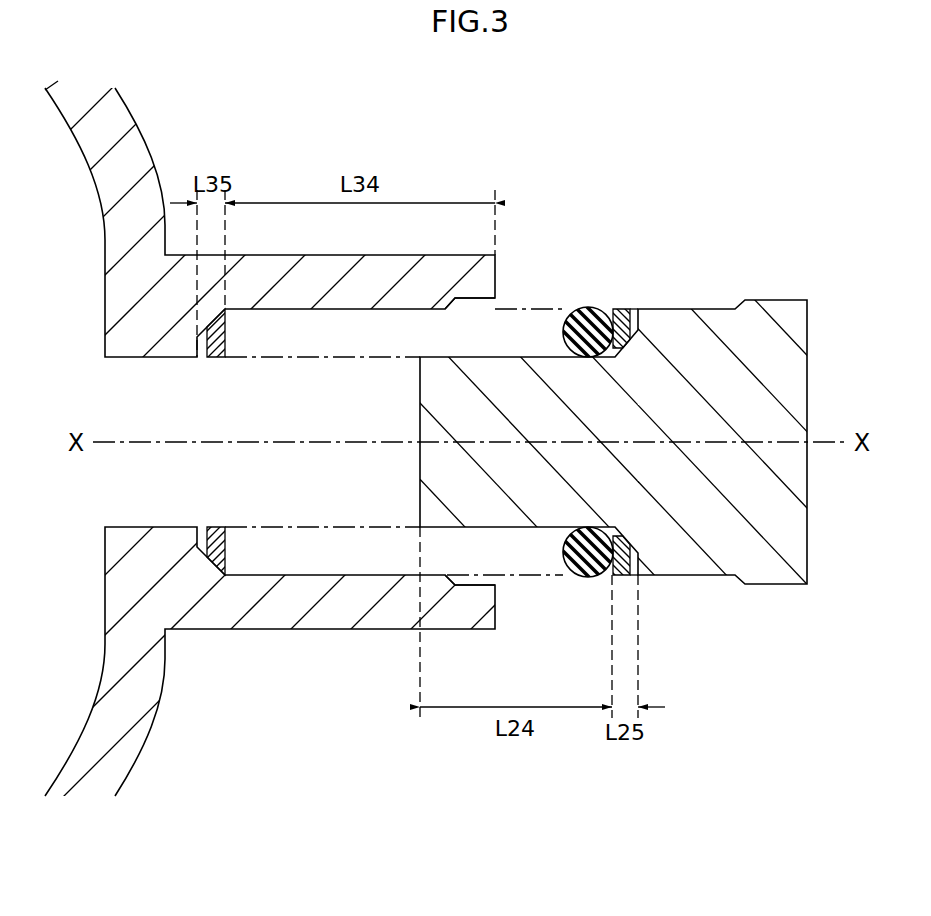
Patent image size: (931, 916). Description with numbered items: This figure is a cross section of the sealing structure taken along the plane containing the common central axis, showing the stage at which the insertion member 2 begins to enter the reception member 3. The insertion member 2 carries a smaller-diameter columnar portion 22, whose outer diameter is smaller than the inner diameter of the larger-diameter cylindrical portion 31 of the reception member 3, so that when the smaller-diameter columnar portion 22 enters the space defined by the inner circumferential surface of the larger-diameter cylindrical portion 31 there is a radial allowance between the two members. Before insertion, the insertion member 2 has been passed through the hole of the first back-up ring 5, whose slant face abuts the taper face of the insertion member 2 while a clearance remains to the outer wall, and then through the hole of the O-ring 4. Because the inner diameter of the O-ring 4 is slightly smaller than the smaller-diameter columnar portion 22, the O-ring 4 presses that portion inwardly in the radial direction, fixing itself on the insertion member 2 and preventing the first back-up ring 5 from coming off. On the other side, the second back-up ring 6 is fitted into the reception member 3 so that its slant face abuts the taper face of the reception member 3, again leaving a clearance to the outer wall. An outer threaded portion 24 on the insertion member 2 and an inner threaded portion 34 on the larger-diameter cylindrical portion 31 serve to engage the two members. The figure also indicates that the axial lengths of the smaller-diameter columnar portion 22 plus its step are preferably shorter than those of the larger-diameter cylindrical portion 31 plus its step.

The insertion member 2 is at (465, 458).
The smaller-diameter columnar portion 22 is at (508, 357).
The outer threaded portion 24 is at (775, 585).
The reception member 3 is at (120, 315).
The larger-diameter cylindrical portion 31 is at (302, 575).
The inner threaded portion 34 is at (462, 577).
The O-ring 4 is at (583, 313).
The first back-up ring 5 is at (620, 320).
The second back-up ring 6 is at (218, 358).